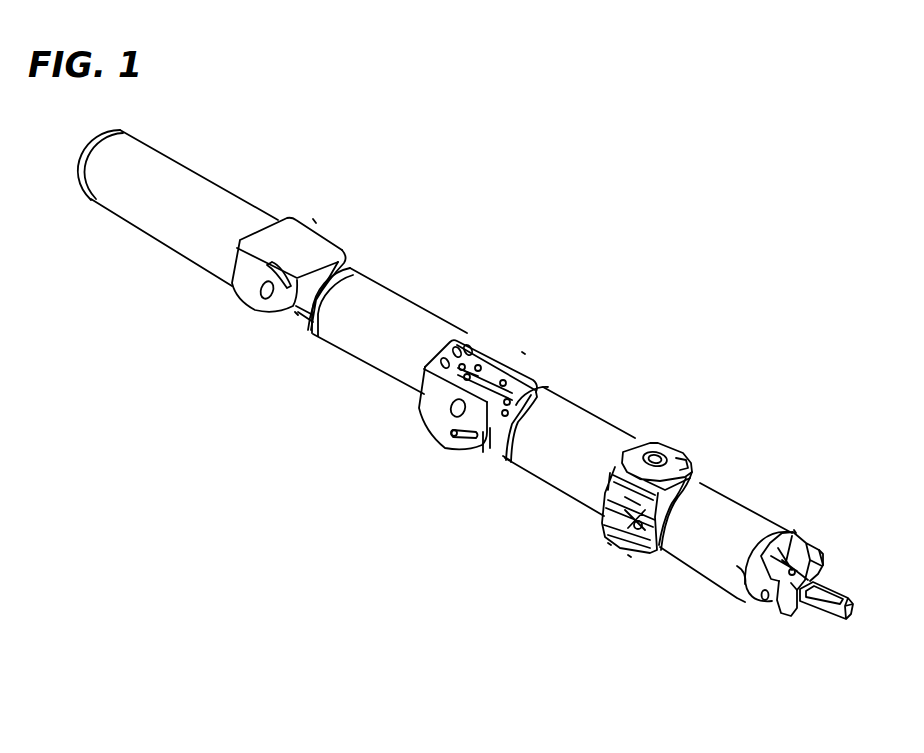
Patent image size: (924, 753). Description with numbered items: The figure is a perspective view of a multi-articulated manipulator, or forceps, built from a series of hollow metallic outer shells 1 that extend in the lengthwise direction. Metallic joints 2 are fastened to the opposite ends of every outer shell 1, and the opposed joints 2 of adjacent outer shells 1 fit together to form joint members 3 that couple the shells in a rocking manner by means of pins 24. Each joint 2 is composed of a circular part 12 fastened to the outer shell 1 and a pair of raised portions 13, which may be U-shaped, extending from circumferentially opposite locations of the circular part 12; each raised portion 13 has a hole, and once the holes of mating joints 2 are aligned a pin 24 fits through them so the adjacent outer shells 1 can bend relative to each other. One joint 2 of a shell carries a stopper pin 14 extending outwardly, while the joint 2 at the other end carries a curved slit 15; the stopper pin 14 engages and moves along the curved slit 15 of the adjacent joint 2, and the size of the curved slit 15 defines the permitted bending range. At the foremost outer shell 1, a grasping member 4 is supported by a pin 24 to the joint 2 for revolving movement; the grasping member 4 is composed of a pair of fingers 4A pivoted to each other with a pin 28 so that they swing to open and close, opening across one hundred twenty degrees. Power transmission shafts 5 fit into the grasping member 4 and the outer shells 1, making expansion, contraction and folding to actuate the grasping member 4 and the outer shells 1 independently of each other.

The outer shell 1 is at (463, 355).
The joint 2 is at (313, 219).
The joint member 3 is at (574, 387).
The grasping member 4 is at (860, 627).
The finger 4A is at (853, 602).
The power transmission shaft 5 is at (480, 370).
The circular part 12 is at (743, 567).
The raised portion 13 is at (433, 405).
The stopper pin 14 is at (270, 270).
The curved slit 15 is at (287, 287).
The pin 24 is at (268, 298).
The pin 28 is at (813, 563).